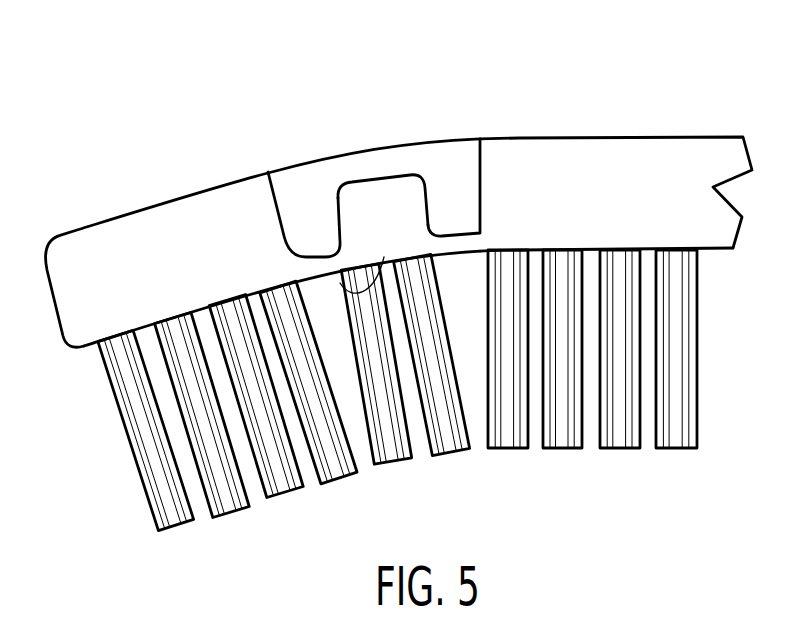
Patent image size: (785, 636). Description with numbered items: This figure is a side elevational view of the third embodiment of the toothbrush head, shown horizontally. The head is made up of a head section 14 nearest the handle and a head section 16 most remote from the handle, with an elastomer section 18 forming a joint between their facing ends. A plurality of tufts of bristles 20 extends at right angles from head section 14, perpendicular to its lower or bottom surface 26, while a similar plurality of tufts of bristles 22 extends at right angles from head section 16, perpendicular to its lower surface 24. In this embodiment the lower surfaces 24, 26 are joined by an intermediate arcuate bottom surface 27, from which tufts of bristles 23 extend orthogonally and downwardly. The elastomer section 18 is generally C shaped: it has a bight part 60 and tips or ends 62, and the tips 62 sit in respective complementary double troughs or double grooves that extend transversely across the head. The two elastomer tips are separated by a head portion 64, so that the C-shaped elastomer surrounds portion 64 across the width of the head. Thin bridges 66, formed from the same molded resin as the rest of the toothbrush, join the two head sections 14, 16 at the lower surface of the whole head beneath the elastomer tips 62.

The elastomer section 18 is at (247, 94).
The head section 14 is at (683, 208).
The head section 16 is at (144, 286).
The tufts of bristles 20 is at (622, 440).
The tufts of bristles 22 is at (179, 522).
The tufts of bristles 23 is at (396, 455).
The lower surface 24 is at (197, 318).
The lower surface 26 is at (643, 253).
The intermediate arcuate bottom surface 27 is at (340, 283).
The bight part 60 is at (372, 162).
The tips 62 is at (300, 240).
The head portion 64 is at (399, 233).
The thin bridges 66 is at (313, 270).